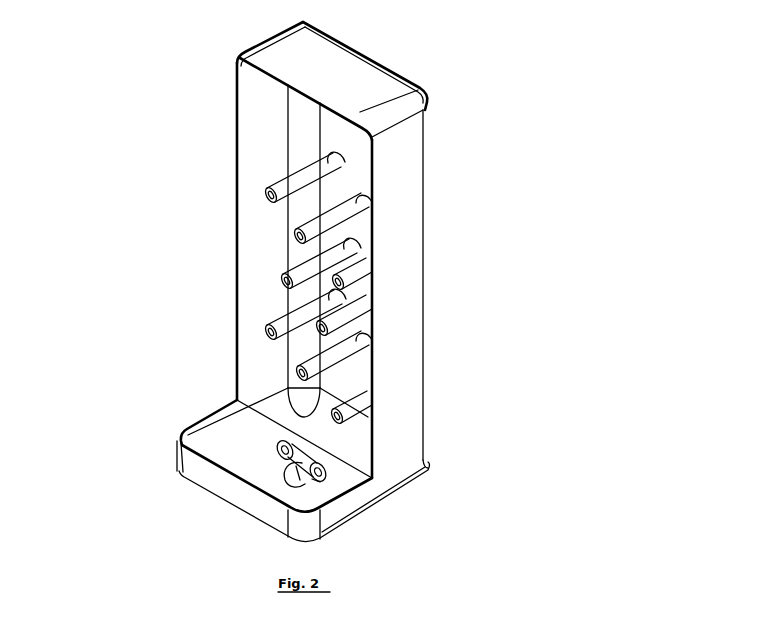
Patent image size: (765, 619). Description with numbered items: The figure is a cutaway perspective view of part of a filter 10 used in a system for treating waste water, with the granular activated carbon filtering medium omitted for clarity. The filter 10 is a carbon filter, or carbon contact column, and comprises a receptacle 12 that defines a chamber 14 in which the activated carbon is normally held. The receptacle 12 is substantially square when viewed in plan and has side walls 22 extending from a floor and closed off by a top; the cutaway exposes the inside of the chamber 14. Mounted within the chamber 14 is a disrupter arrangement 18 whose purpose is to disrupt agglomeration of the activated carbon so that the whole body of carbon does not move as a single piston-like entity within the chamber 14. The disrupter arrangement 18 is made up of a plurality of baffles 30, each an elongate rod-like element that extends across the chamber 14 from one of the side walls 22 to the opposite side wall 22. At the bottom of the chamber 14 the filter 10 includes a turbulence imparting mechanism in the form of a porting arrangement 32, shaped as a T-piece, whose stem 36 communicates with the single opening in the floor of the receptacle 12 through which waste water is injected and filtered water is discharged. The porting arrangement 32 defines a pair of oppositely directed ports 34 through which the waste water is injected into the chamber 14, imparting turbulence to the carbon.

The filter 10 is at (534, 289).
The receptacle 12 is at (430, 177).
The chamber 14 is at (356, 139).
The disrupter arrangement 18 is at (268, 272).
The side walls 22 is at (413, 307).
The baffles 30 is at (272, 192).
The porting arrangement 32 is at (323, 487).
The ports 34 is at (270, 452).
The stem 36 is at (282, 484).